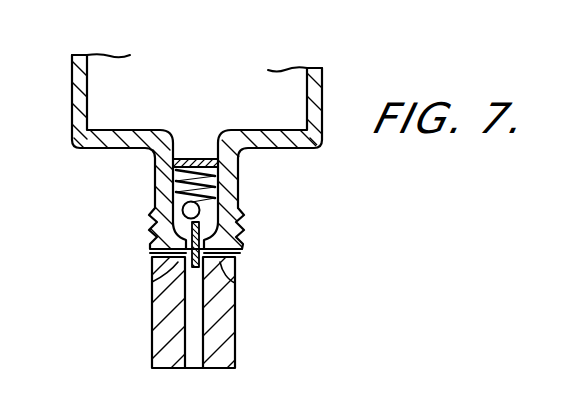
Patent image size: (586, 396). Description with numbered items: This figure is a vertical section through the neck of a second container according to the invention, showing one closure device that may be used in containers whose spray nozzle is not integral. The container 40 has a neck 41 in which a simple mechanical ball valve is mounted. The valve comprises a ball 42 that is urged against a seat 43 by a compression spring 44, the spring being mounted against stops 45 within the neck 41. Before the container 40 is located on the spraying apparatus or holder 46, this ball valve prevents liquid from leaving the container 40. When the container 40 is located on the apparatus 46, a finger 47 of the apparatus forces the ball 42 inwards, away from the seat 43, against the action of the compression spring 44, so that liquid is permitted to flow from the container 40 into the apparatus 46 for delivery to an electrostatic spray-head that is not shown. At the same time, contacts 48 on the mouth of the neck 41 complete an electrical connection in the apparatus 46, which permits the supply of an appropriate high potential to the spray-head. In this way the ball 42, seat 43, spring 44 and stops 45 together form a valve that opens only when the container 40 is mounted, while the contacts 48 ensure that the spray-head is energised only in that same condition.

The container 40 is at (322, 108).
The neck 41 is at (233, 171).
The ball 42 is at (212, 215).
The seat 43 is at (238, 240).
The compression spring 44 is at (190, 175).
The stops 45 is at (213, 159).
The spraying apparatus 46 is at (232, 330).
The finger 47 is at (185, 237).
The contacts 48 is at (253, 297).